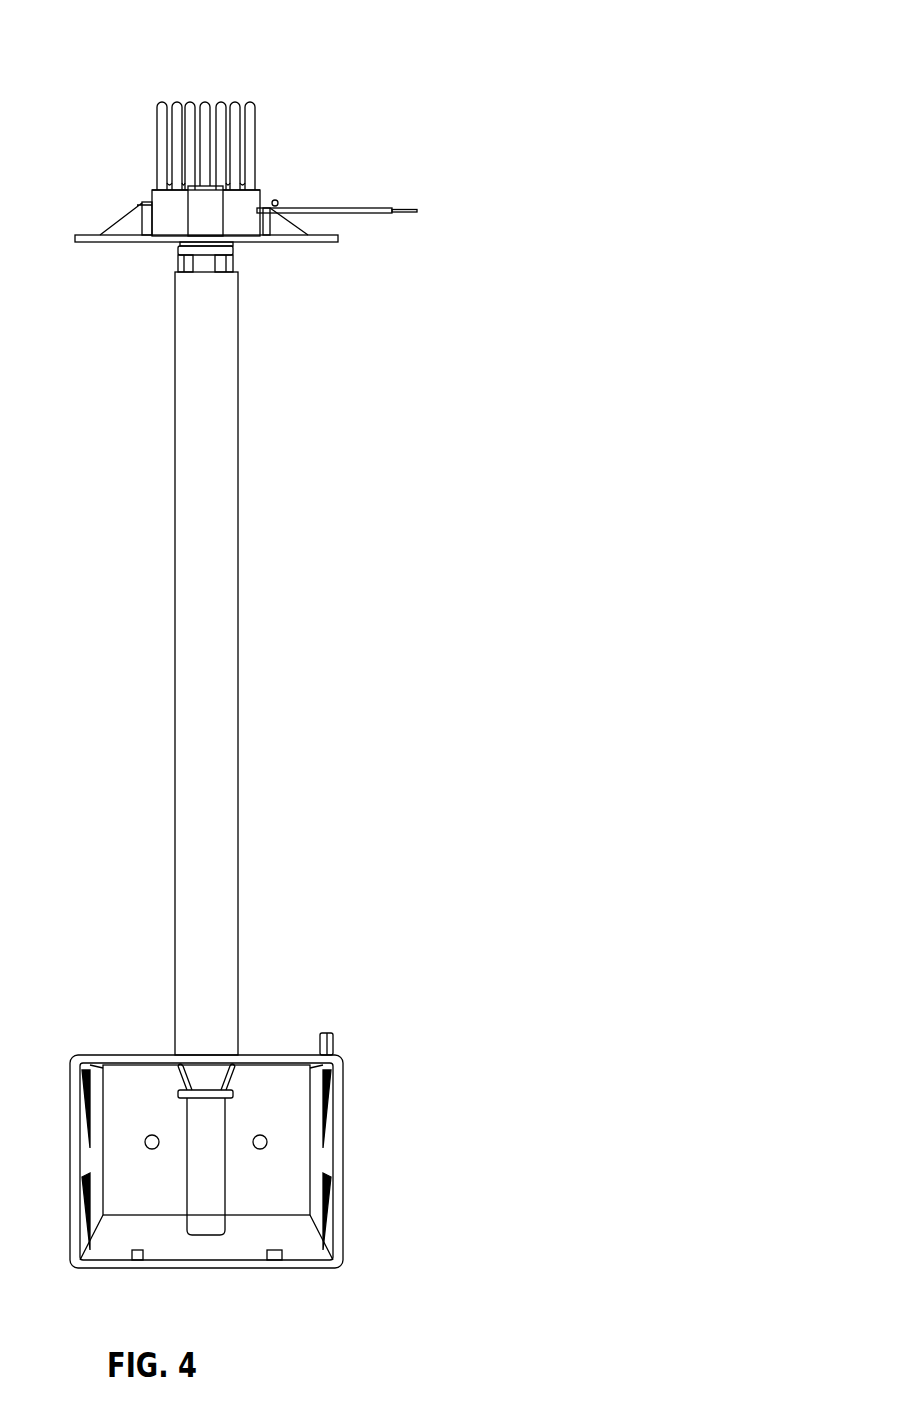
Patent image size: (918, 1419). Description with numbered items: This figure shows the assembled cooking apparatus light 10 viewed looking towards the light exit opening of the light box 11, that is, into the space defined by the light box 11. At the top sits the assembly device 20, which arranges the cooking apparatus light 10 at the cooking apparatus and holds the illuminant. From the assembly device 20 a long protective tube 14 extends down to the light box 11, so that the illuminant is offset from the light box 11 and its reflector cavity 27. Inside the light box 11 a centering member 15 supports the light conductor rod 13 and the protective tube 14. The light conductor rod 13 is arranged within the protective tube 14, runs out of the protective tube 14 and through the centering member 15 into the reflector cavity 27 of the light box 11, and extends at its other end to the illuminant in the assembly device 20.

The cooking apparatus light 10 is at (487, 115).
The assembly device 20 is at (310, 182).
The protective tube 14 is at (255, 617).
The light box 11 is at (357, 1110).
The centering member 15 is at (233, 1082).
The light conductor rod 13 is at (233, 1168).
The reflector cavity 27 is at (287, 1230).